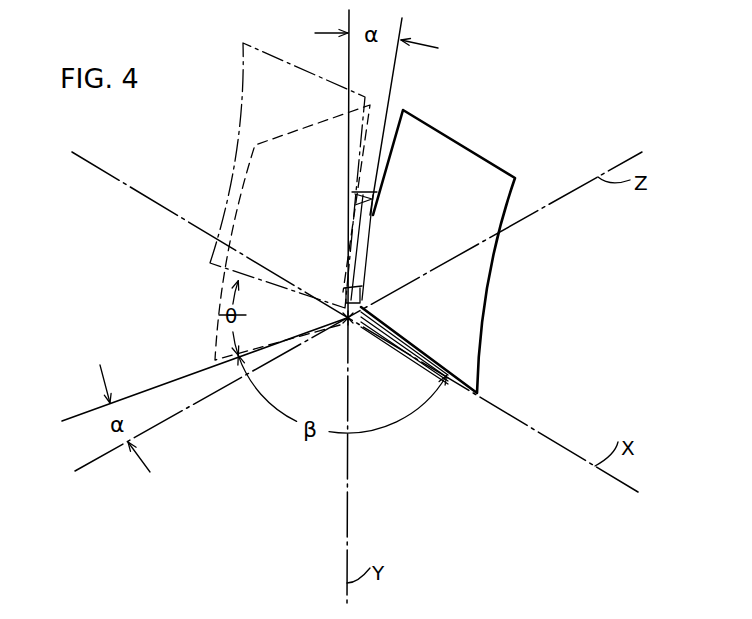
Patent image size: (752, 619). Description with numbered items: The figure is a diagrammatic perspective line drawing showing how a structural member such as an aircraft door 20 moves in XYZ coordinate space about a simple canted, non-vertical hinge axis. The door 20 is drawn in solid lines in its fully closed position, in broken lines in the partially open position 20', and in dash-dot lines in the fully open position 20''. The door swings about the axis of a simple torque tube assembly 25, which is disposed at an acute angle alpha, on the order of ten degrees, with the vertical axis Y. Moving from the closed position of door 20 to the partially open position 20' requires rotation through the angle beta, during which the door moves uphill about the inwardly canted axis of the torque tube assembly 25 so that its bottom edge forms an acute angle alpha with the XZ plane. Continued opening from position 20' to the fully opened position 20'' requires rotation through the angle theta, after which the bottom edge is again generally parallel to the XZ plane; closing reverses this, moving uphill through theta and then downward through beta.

The aircraft door 20 is at (453, 251).
The door in partially open position 20' is at (260, 232).
The door in fully open position 20'' is at (268, 175).
The torque tube assembly 25 is at (372, 207).